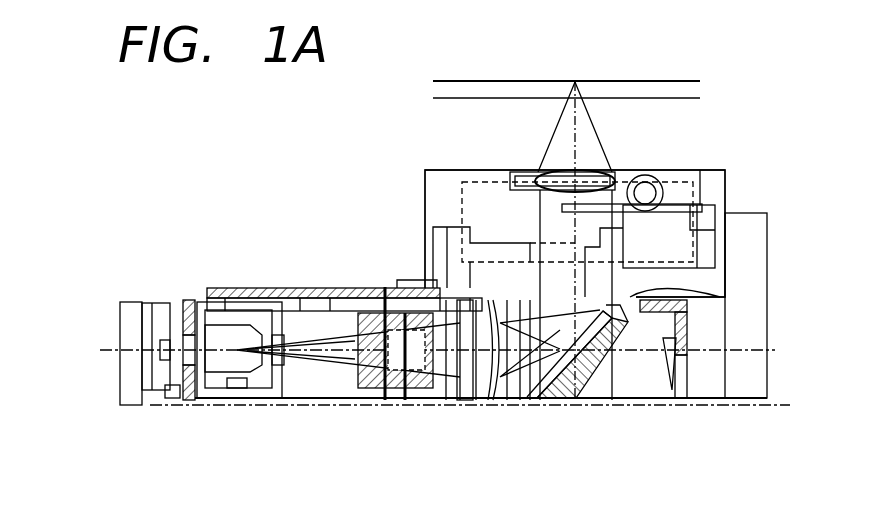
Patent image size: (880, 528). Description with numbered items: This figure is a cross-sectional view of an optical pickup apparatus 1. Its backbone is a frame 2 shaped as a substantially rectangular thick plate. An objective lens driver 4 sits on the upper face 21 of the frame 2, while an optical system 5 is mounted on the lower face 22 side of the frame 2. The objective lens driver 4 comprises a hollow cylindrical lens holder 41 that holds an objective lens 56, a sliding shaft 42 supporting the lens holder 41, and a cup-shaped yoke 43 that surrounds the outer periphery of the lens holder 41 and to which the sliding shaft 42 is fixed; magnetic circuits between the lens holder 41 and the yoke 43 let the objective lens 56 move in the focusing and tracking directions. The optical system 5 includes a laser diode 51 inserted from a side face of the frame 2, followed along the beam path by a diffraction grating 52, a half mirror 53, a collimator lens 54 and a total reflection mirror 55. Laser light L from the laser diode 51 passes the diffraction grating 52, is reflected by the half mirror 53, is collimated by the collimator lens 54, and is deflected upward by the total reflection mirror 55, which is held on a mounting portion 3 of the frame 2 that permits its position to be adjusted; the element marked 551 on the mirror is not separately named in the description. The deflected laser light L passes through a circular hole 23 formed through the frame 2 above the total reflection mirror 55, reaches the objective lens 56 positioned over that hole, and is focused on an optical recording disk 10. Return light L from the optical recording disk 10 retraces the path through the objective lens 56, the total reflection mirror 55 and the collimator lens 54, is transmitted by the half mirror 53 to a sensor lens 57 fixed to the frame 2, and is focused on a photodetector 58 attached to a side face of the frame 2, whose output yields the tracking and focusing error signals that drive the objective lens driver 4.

The optical pickup apparatus 1 is at (798, 118).
The frame 2 is at (760, 385).
The mounting portion 3 is at (641, 336).
The objective lens driver 4 is at (422, 200).
The optical system 5 is at (323, 388).
The optical recording disk 10 is at (637, 92).
The upper face 21 is at (362, 287).
The lower face 22 is at (620, 394).
The circular hole 23 is at (652, 290).
The lens holder 41 is at (484, 183).
The sliding shaft 42 is at (563, 242).
The yoke 43 is at (740, 188).
The laser diode 51 is at (421, 402).
The diffraction grating 52 is at (368, 405).
The half mirror 53 is at (388, 402).
The collimator lens 54 is at (492, 402).
The total reflection mirror 55 is at (565, 402).
The reflecting surface 551 is at (528, 402).
The objective lens 56 is at (605, 185).
The sensor lens 57 is at (260, 386).
The photodetector 58 is at (160, 405).
The laser light L is at (470, 405).